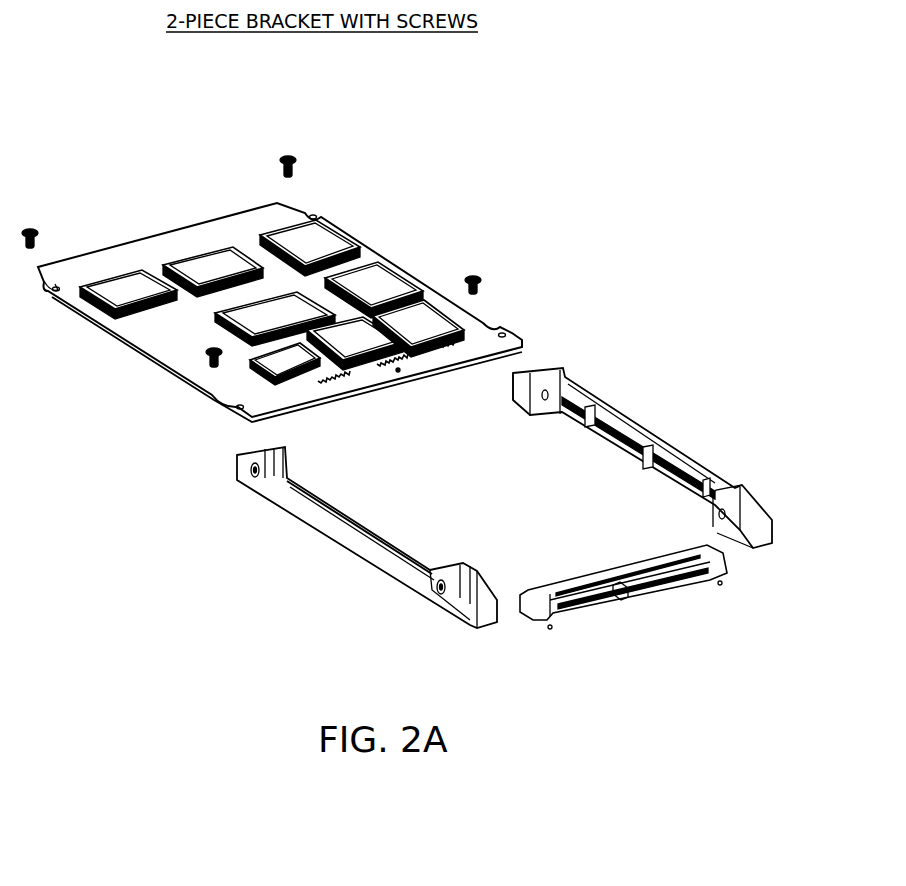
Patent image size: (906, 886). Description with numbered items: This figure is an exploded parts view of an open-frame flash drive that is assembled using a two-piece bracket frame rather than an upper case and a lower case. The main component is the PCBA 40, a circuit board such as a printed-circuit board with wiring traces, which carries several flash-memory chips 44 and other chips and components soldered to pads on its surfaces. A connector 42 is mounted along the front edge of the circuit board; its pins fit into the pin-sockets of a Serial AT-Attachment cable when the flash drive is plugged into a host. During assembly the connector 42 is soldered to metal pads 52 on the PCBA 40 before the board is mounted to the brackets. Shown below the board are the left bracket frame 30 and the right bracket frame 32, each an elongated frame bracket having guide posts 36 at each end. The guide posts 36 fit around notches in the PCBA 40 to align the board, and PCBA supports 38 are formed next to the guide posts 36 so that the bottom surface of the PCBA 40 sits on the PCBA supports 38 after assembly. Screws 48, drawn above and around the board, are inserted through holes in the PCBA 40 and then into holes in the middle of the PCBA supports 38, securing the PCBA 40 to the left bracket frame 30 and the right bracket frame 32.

The left bracket frame 30 is at (352, 550).
The right bracket frame 32 is at (632, 422).
The guide posts 36 is at (292, 450).
The PCBA supports 38 is at (558, 422).
The PCBA 40 is at (156, 370).
The connector 42 is at (627, 598).
The flash-memory chips 44 is at (218, 265).
The screws 48 is at (290, 158).
The metal pads 52 is at (350, 371).